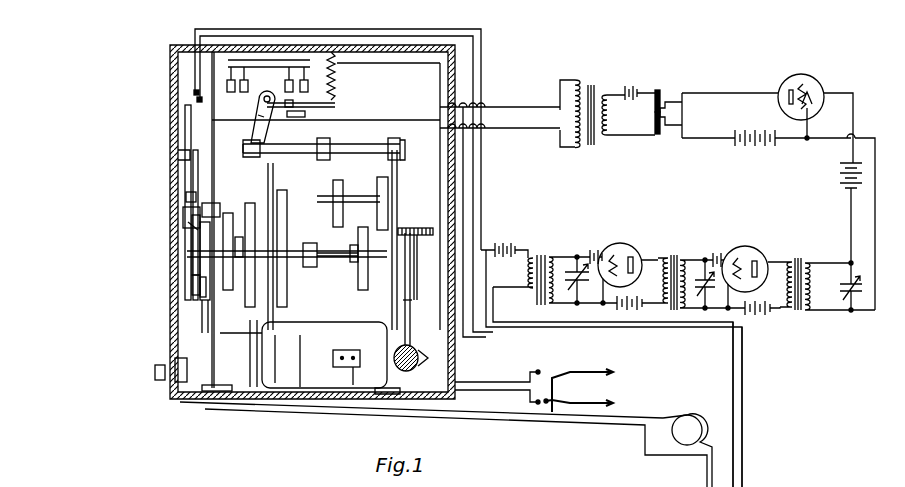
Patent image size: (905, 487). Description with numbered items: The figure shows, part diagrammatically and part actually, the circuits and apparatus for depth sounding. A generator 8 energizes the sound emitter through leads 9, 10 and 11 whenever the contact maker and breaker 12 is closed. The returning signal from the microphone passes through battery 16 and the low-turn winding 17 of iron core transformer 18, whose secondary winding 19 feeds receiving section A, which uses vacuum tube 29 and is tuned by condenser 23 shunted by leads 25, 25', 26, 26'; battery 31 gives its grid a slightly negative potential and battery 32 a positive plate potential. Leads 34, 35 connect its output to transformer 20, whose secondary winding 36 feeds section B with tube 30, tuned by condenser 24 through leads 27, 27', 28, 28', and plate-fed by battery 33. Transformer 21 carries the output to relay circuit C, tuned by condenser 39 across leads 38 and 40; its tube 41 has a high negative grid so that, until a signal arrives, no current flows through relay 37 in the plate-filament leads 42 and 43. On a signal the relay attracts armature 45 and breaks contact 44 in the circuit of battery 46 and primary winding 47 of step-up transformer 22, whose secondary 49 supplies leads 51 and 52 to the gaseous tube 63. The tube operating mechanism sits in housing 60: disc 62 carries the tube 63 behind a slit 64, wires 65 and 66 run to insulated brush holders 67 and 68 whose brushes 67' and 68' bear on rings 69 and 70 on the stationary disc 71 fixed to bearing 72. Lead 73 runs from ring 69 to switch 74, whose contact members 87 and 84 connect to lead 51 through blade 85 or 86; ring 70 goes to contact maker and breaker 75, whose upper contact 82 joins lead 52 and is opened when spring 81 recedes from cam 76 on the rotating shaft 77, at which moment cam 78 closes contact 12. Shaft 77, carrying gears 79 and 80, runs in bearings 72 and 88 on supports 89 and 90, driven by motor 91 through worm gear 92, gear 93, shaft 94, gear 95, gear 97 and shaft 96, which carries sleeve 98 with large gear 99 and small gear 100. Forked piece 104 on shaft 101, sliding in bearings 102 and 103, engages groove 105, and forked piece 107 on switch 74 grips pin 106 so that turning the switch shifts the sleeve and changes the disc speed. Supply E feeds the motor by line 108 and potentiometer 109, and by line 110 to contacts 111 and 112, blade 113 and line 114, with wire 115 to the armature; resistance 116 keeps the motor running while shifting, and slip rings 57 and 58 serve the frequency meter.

The generator 8 is at (690, 416).
The lead 9 is at (641, 418).
The lead 10 is at (740, 450).
The lead 11 is at (625, 426).
The contact maker and breaker 12 is at (260, 195).
The battery 16 is at (507, 243).
The transformer winding 17 is at (529, 258).
The transformer 18 is at (541, 255).
The winding 19 is at (555, 257).
The transformer 20 is at (675, 258).
The transformer 21 is at (799, 258).
The iron core transformer 22 is at (592, 95).
The condenser 23 is at (631, 258).
The condenser 24 is at (697, 292).
The lead 25 is at (577, 255).
The lead 25' is at (591, 238).
The lead 26 is at (548, 327).
The lead 26' is at (597, 318).
The lead 27 is at (716, 210).
The lead 27' is at (727, 242).
The lead 28 is at (710, 303).
The lead 28' is at (747, 323).
The vacuum tube 29 is at (662, 258).
The vacuum tube 30 is at (760, 254).
The battery 31 is at (598, 250).
The battery 32 is at (630, 310).
The battery 33 is at (770, 314).
The lead 34 is at (685, 262).
The lead 35 is at (658, 308).
The secondary winding 36 is at (683, 312).
The relay 37 is at (676, 100).
The lead 38 is at (820, 312).
The condenser 39 is at (855, 300).
The lead 40 is at (818, 268).
The vacuum tube 41 is at (822, 90).
The lead 42 is at (735, 93).
The lead 43 is at (715, 140).
The contact 44 is at (658, 90).
The armature 45 is at (658, 134).
The battery 46 is at (632, 88).
The primary winding 47 is at (597, 137).
The secondary winding 49 is at (578, 80).
The lead 51 is at (520, 110).
The lead 52 is at (527, 130).
The slip ring 57 is at (275, 388).
The slip ring 58 is at (330, 392).
The housing 60 is at (232, 402).
The disc 62 is at (210, 302).
The gaseous tube 63 is at (187, 170).
The slit 64 is at (190, 178).
The wire 65 is at (188, 200).
The wire 66 is at (176, 157).
The brush holder 67 is at (163, 217).
The brush 67' is at (161, 234).
The brush holder 68 is at (163, 245).
The brush 68' is at (162, 284).
The ring 69 is at (193, 254).
The ring 70 is at (213, 263).
The disc 71 is at (205, 318).
The bearing 72 is at (200, 300).
The lead 73 is at (202, 132).
The switch 74 is at (268, 60).
The contact maker and breaker 75 is at (212, 203).
The cam 76 is at (250, 205).
The rotating shaft 77 is at (335, 260).
The cam 78 is at (172, 395).
The gear 79 is at (310, 270).
The gear 80 is at (362, 292).
The spring 81 is at (228, 215).
The upper contact 82 is at (246, 152).
The contact member 84 is at (195, 45).
The switch blade 85 is at (335, 75).
The switch blade 86 is at (242, 86).
The contact member 87 is at (290, 86).
The bearing 88 is at (410, 300).
The support 89 is at (178, 362).
The support 90 is at (412, 320).
The motor 91 is at (300, 390).
The worm gear 92 is at (410, 372).
The gear 93 is at (427, 363).
The shaft 94 is at (415, 253).
The gear 95 is at (413, 228).
The shaft 96 is at (343, 200).
The gear 97 is at (388, 185).
The sleeve 98 is at (372, 145).
The large gear 99 is at (252, 138).
The small gear 100 is at (343, 157).
The shaft 101 is at (367, 147).
The bearing 102 is at (404, 149).
The bearing 103 is at (337, 82).
The forked piece 104 is at (330, 150).
The groove 105 is at (320, 210).
The pin 106 is at (255, 143).
The forked piece 107 is at (200, 99).
The line 108 is at (520, 391).
The potentiometer 109 is at (160, 380).
The line 110 is at (520, 382).
The contact 111 is at (300, 130).
The contact 112 is at (197, 92).
The blade 113 is at (320, 155).
The line 114 is at (426, 380).
The wire 115 is at (215, 392).
The resistance 116 is at (310, 150).
The receiving circuit section A is at (628, 265).
The receiving circuit section B is at (752, 268).
The relay circuit C is at (801, 98).
The current supply E is at (578, 390).